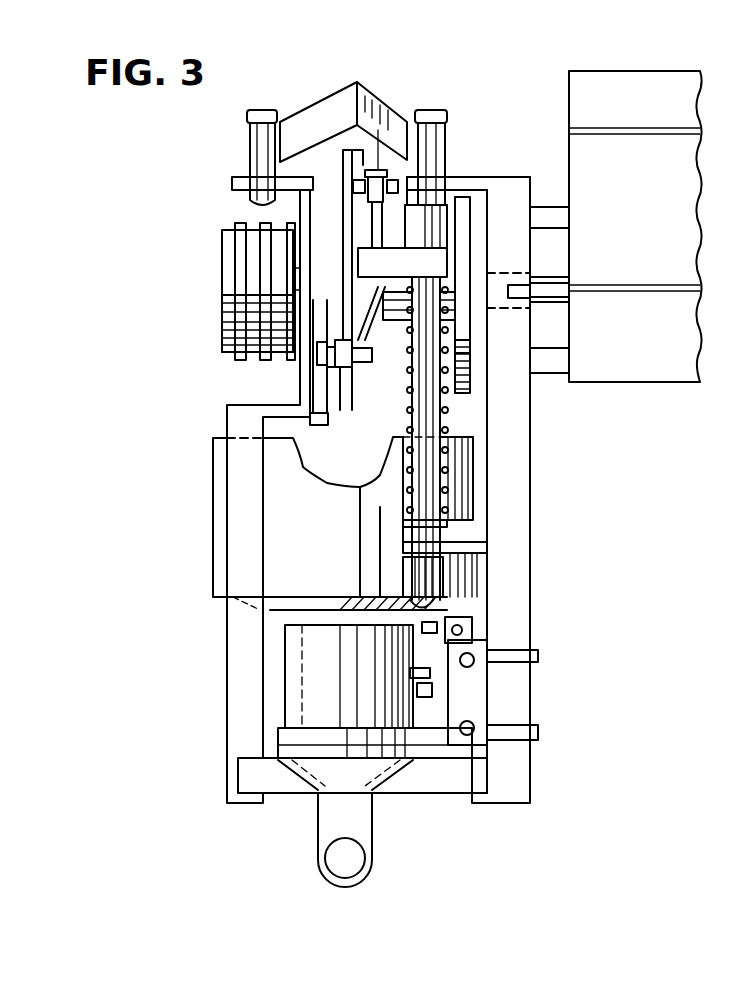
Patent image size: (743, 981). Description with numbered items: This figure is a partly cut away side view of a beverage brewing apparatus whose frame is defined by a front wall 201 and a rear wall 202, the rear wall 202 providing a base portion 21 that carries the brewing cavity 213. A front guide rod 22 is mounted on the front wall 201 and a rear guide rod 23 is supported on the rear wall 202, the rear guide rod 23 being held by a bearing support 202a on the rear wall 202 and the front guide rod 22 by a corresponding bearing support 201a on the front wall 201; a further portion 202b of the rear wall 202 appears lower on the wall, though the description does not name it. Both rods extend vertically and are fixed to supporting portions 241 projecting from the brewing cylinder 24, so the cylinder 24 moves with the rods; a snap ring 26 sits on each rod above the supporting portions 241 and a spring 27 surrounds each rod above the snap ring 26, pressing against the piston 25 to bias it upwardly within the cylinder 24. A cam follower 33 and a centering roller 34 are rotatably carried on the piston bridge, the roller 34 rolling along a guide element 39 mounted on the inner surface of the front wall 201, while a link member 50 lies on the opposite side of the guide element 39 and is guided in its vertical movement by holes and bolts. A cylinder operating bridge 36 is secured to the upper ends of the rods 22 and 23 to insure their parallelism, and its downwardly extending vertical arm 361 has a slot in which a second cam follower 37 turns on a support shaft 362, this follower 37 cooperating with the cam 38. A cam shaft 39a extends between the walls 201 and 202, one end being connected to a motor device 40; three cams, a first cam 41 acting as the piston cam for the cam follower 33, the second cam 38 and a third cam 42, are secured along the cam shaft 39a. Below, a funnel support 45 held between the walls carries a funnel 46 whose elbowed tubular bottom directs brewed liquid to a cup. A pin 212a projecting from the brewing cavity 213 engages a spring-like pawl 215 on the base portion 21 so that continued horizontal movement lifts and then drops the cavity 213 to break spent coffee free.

The base portion 21 is at (270, 663).
The front guide rod 22 is at (250, 200).
The rear guide rod 23 is at (427, 393).
The brewing cylinder 24 is at (213, 555).
The piston 25 is at (368, 340).
The snap ring 26 is at (412, 535).
The spring 27 is at (450, 480).
The cam follower 33 is at (340, 368).
The centering roller 34 is at (312, 355).
The cylinder operating bridge 36 is at (328, 107).
The cam follower 37 is at (375, 160).
The cam 38 is at (368, 228).
The guide element 39 is at (332, 403).
The cam shaft 39a is at (360, 275).
The motor device 40 is at (617, 71).
The first cam 41 is at (345, 230).
The third cam 42 is at (465, 230).
The funnel support 45 is at (282, 793).
The funnel 46 is at (372, 837).
The link member 50 is at (222, 330).
The front wall 201 is at (305, 280).
The bearing support 201a is at (235, 180).
The rear wall 202 is at (528, 414).
The bearing support 202a is at (430, 185).
The lower plate 202b is at (445, 545).
The pin 212a is at (432, 673).
The brewing cavity 213 is at (267, 703).
The pawl 215 is at (432, 690).
The supporting portion 241 is at (443, 582).
The vertical arm 361 is at (363, 162).
The support shaft 362 is at (432, 185).